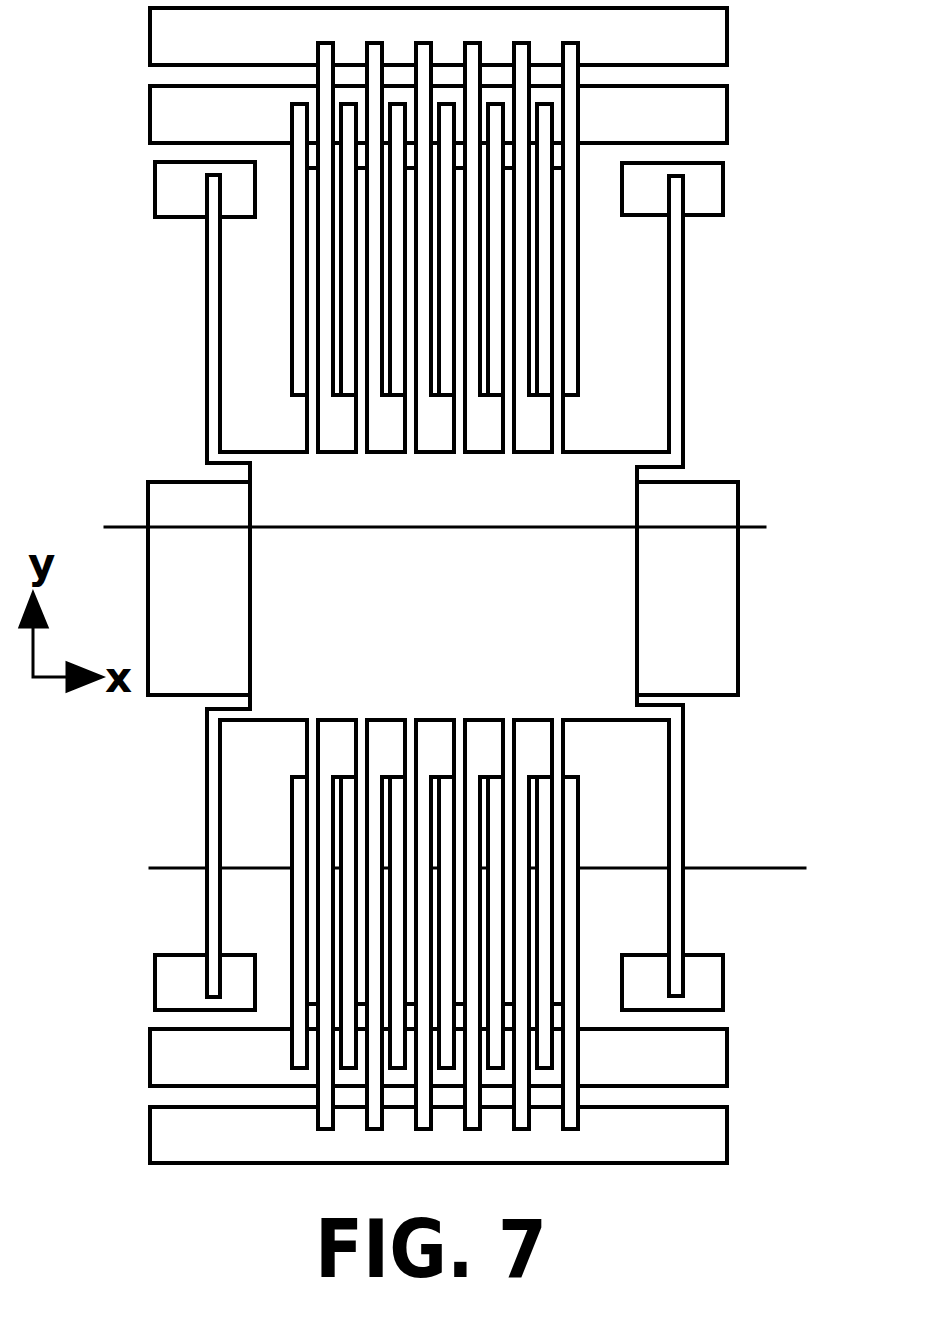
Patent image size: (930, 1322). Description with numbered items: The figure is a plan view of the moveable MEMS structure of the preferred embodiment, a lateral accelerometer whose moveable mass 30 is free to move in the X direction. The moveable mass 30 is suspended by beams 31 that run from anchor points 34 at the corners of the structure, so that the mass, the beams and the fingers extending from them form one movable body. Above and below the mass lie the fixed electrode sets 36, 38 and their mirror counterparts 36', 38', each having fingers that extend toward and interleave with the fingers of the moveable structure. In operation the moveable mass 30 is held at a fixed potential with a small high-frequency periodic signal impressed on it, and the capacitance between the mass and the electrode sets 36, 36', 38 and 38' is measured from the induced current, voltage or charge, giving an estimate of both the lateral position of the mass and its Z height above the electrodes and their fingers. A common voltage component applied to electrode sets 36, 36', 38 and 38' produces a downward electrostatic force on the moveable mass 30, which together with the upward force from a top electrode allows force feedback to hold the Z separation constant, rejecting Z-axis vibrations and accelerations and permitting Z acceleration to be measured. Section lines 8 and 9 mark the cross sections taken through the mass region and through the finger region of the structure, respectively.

The moveable mass 30 is at (453, 607).
The beams 31 is at (205, 405).
The anchor points 34 is at (160, 188).
The electrode set 36 is at (494, 201).
The electrode set 36' is at (500, 970).
The electrode set 38 is at (494, 240).
The electrode set 38' is at (500, 931).
The section line 8- 8 is at (438, 528).
The section line 9- 9 is at (480, 872).